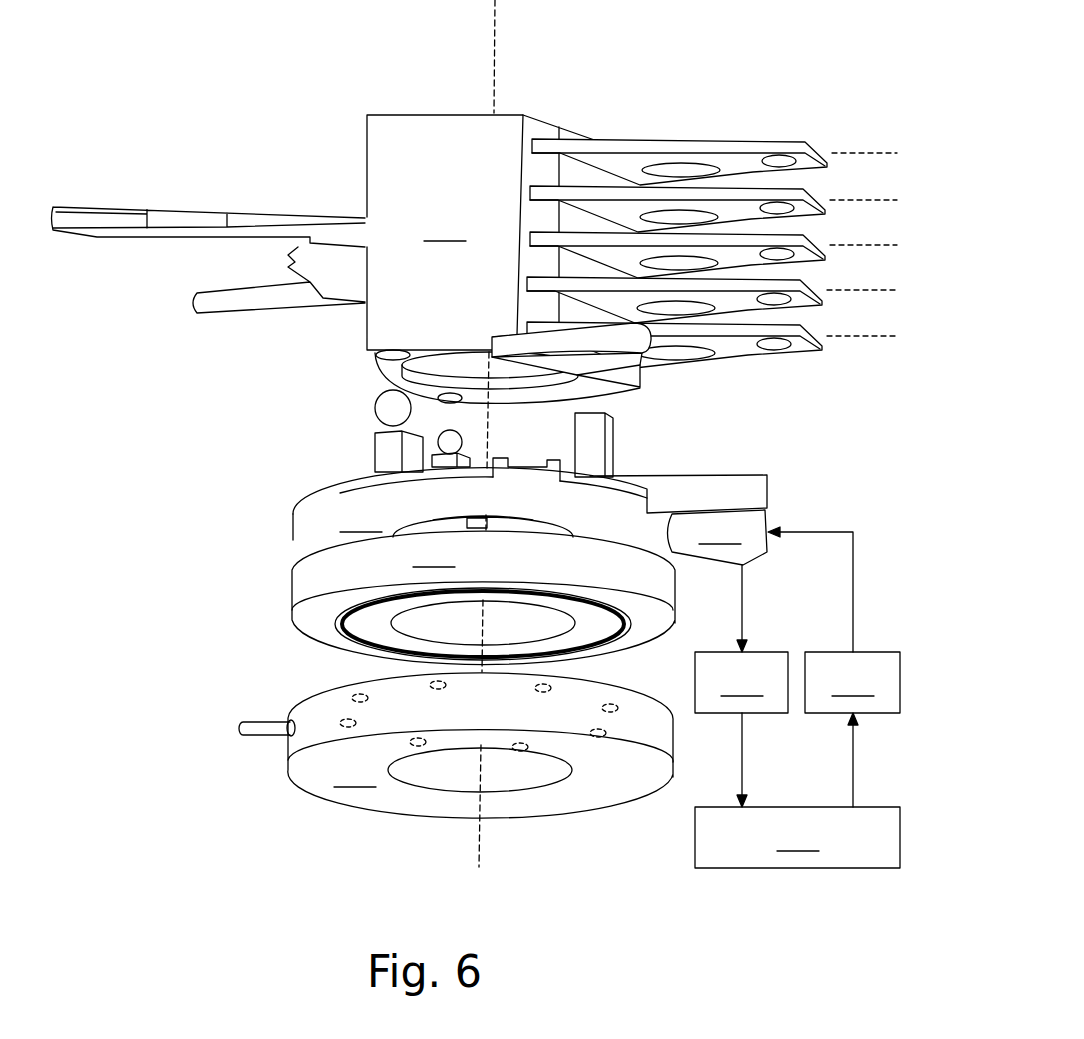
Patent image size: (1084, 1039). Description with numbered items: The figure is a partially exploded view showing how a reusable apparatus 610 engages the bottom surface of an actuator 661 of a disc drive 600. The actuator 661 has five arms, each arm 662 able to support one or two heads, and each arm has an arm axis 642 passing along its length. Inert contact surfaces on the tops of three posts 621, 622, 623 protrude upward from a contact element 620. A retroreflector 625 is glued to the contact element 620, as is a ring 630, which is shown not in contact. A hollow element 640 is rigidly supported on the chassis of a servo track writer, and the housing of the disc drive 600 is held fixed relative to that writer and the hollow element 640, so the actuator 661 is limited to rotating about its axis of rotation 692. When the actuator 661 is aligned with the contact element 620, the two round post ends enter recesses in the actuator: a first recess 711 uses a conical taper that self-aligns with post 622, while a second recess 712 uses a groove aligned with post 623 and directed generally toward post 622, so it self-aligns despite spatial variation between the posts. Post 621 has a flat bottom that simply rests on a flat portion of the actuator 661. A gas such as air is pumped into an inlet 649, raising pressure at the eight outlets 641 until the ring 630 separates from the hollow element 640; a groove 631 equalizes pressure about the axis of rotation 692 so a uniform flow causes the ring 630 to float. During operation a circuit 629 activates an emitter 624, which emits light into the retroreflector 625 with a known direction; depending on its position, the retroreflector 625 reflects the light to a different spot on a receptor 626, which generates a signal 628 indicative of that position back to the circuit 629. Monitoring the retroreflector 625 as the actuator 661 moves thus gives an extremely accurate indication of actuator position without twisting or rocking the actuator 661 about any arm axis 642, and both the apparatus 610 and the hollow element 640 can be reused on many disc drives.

The disc drive 600 is at (476, 434).
The reusable apparatus 610 is at (247, 455).
The contact element 620 is at (530, 499).
The post 621 is at (594, 432).
The post 622 is at (385, 445).
The post 623 is at (462, 458).
The emitter 624 is at (834, 620).
The retroreflector 625 is at (718, 537).
The receptor 626 is at (741, 639).
The signal 628 is at (761, 760).
The circuit 629 is at (797, 790).
The ring 630 is at (483, 598).
The groove 631 is at (347, 625).
The hollow element 640 is at (480, 745).
The outlets 641 is at (555, 703).
The arm axes 642 is at (868, 150).
The inlet 649 is at (263, 728).
The actuator 661 is at (328, 232).
The arm 662 is at (737, 143).
The axis of rotation 692 is at (493, 53).
The first recess 711 is at (378, 358).
The second recess 712 is at (468, 400).